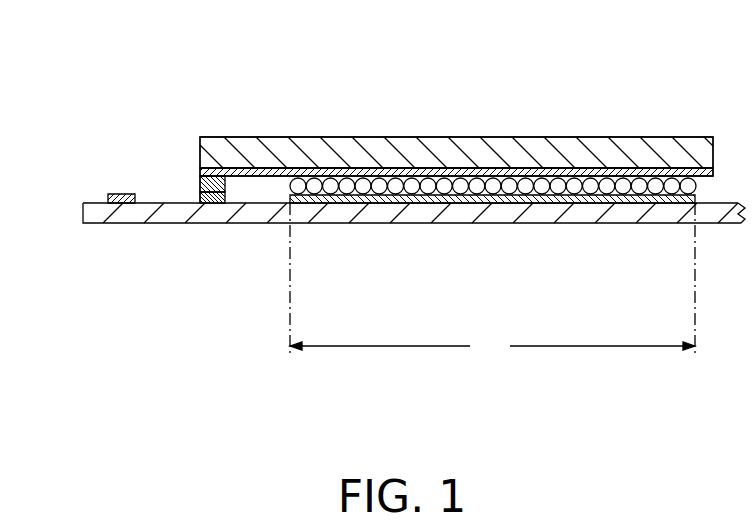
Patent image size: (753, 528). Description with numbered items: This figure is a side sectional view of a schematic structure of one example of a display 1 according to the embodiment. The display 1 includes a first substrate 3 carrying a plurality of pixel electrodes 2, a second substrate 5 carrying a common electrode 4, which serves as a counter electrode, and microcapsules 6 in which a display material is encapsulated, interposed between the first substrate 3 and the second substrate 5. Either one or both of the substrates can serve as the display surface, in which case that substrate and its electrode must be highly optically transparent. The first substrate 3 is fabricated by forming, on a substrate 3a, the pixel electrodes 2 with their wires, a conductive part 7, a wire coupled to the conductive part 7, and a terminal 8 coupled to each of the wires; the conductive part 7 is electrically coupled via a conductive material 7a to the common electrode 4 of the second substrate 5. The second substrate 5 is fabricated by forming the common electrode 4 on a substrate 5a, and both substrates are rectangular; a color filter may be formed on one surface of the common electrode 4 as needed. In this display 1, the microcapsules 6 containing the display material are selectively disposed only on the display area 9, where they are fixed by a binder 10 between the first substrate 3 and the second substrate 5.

The display 1 is at (680, 113).
The pixel electrodes 2 is at (375, 200).
The first substrate 3 is at (457, 223).
The substrate 3a is at (263, 214).
The common electrode 4 is at (273, 156).
The second substrate 5 is at (470, 138).
The substrate 5a is at (366, 172).
The microcapsules 6 is at (416, 178).
The conductive part 7 is at (212, 205).
The conductive material 7a is at (200, 184).
The terminal 8 is at (122, 194).
The display area 9 is at (492, 282).
The binder 10 is at (587, 200).